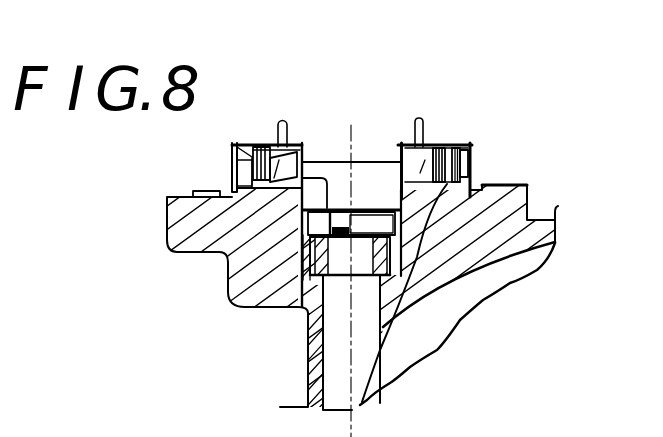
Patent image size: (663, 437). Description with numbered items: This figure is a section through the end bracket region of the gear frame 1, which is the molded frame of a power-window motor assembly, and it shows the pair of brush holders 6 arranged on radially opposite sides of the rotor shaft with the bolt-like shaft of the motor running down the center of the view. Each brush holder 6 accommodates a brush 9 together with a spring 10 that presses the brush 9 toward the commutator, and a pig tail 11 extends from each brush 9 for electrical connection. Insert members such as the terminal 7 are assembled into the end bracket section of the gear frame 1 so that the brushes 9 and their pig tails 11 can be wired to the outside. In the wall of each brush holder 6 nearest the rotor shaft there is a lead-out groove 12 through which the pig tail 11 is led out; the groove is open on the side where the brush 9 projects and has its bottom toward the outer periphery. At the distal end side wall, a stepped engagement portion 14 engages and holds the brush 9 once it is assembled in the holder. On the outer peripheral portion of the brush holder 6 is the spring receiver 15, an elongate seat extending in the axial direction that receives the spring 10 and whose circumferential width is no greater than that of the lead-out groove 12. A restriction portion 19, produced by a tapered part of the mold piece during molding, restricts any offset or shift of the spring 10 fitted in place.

The gear frame 1 is at (2, 277).
The brush holder 6 is at (243, 143).
The terminal 7 is at (376, 208).
The brush 9 is at (426, 144).
The spring 10 is at (472, 160).
The pig tail 11 is at (422, 114).
The lead-out groove 12 is at (403, 141).
The stepped engagement portion 14 is at (401, 182).
The spring receiver 15 is at (246, 172).
The restriction portion 19 is at (437, 186).